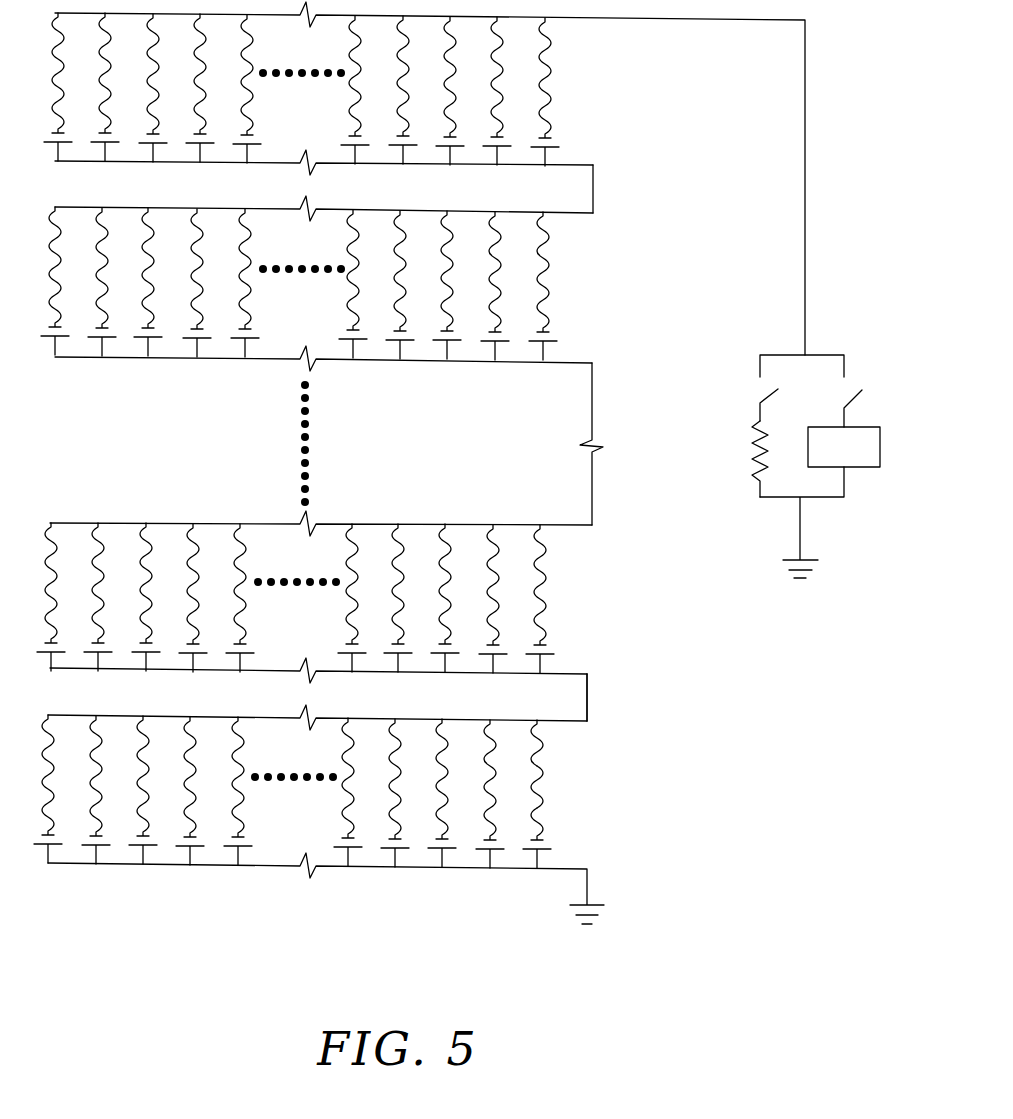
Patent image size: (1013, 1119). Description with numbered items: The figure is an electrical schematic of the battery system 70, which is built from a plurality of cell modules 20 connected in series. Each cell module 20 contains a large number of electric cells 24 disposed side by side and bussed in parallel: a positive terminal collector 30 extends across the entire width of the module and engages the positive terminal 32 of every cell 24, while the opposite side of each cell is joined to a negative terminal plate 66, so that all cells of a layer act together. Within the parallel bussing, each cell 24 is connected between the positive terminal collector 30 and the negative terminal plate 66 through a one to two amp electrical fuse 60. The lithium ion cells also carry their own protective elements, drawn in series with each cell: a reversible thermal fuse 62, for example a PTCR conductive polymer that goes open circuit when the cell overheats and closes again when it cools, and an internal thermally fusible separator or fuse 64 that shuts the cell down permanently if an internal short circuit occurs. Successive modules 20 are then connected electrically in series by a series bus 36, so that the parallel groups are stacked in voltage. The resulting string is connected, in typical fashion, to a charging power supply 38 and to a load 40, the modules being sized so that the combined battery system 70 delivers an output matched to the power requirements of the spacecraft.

The battery cell module 20 is at (594, 112).
The electric cell 24 is at (566, 855).
The positive terminal collector 30 is at (580, 164).
The positive terminal 32 is at (568, 349).
The series bus 36 is at (593, 393).
The charging power supply 38 is at (865, 468).
The load 40 is at (757, 440).
The electrical fuse 60 is at (547, 735).
The reversible thermal fuse 62 is at (547, 775).
The thermally fusible separator or fuse 64 is at (547, 815).
The negative terminal plate 66 is at (578, 527).
The battery system 70 is at (372, 896).